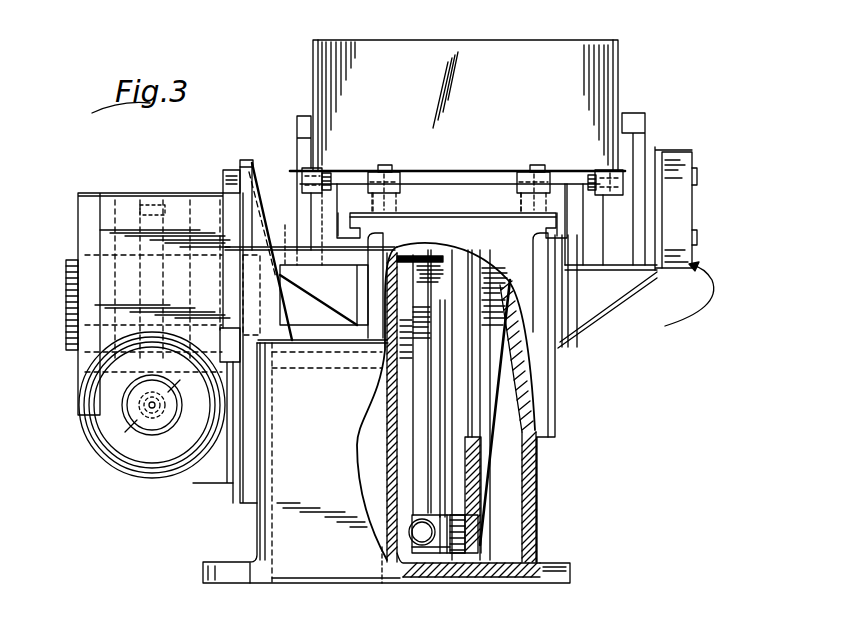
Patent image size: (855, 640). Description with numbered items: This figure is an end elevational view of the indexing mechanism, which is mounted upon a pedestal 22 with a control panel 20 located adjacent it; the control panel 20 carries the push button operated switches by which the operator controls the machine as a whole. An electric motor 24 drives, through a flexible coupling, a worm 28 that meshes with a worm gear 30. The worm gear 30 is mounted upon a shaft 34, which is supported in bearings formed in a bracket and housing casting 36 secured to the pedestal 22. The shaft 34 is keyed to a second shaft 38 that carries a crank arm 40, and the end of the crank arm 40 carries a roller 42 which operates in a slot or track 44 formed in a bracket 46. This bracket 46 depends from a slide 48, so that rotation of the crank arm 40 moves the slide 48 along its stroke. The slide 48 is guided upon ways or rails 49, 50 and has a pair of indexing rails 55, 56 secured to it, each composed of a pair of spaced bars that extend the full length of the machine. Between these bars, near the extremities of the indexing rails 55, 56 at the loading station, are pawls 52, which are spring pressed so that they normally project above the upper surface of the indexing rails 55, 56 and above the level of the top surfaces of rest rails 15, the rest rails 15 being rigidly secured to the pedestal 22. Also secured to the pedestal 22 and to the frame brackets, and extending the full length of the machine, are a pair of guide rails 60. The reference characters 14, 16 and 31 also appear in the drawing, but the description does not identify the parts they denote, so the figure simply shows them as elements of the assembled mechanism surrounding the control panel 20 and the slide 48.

The control box 14 is at (500, 87).
The rest rails 15 is at (292, 163).
The mounting bracket 16 is at (628, 170).
The control panel 20 is at (692, 213).
The pedestal 22 is at (503, 535).
The electric motor 24 is at (143, 462).
The worm 28 is at (97, 441).
The worm gear 30 is at (142, 222).
The post cap 31 is at (242, 323).
The shaft 34 is at (78, 312).
The bracket and housing casting 36 is at (223, 185).
The shaft 38 is at (317, 330).
The crank arm 40 is at (440, 468).
The roller 42 is at (457, 556).
The slot or track 44 is at (585, 475).
The bracket 46 is at (489, 480).
The slide 48 is at (427, 193).
The way or rail 49 is at (337, 213).
The way or rail 50 is at (557, 213).
The pawls 52 is at (392, 165).
The indexing rail 55 is at (370, 210).
The indexing rail 56 is at (518, 182).
The guide rails 60 is at (303, 117).